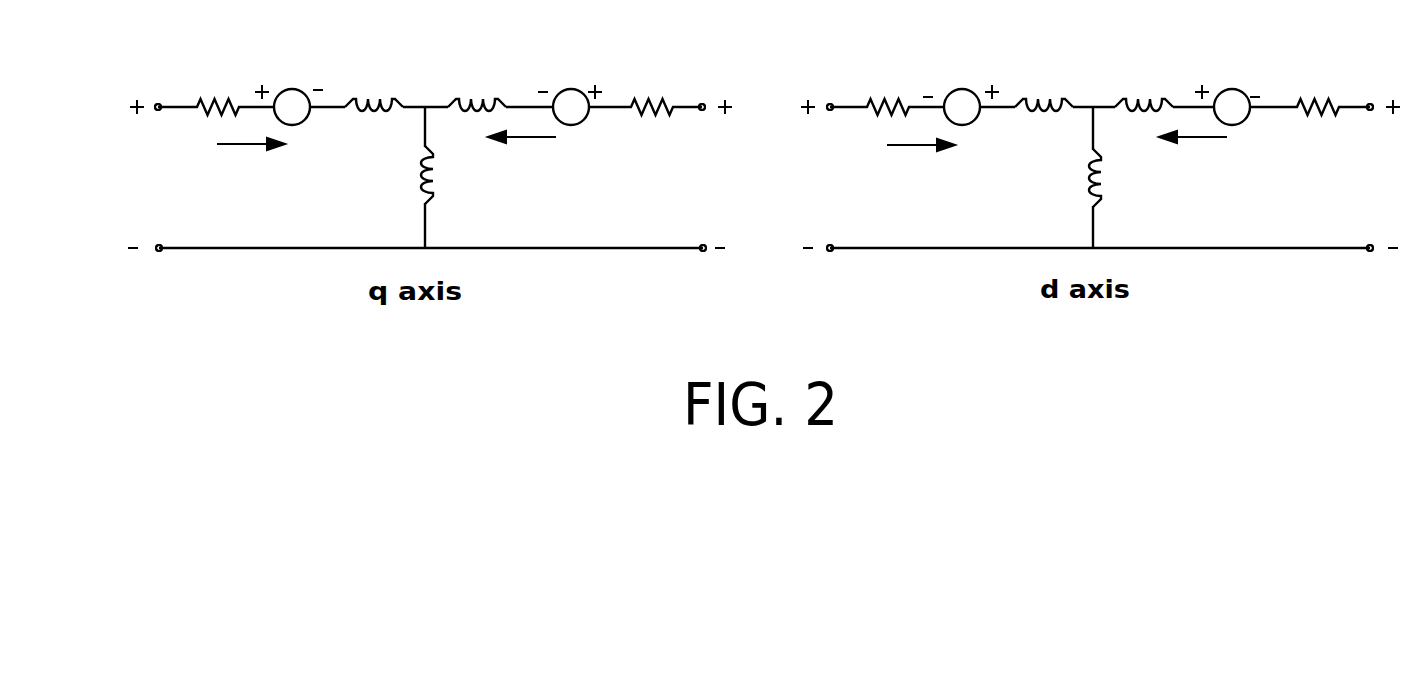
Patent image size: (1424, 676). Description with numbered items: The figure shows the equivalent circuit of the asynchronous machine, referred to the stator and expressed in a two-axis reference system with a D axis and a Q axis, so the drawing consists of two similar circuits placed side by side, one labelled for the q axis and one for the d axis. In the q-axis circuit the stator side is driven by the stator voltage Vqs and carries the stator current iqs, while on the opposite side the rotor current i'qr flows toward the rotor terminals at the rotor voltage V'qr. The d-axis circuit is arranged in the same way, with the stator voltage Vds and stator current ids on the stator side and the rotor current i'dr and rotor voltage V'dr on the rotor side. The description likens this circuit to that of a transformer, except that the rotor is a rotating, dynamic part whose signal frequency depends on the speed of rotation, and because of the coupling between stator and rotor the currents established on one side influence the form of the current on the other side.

The q axis stator voltage Vqs is at (137, 177).
The q axis stator current iqs is at (251, 168).
The q axis rotor current i'qr is at (522, 166).
The q axis rotor voltage V'qr is at (708, 177).
The d axis stator voltage Vds is at (814, 177).
The d axis stator current ids is at (921, 168).
The d axis rotor current i'dr is at (1193, 164).
The d axis rotor voltage V'dr is at (1376, 177).